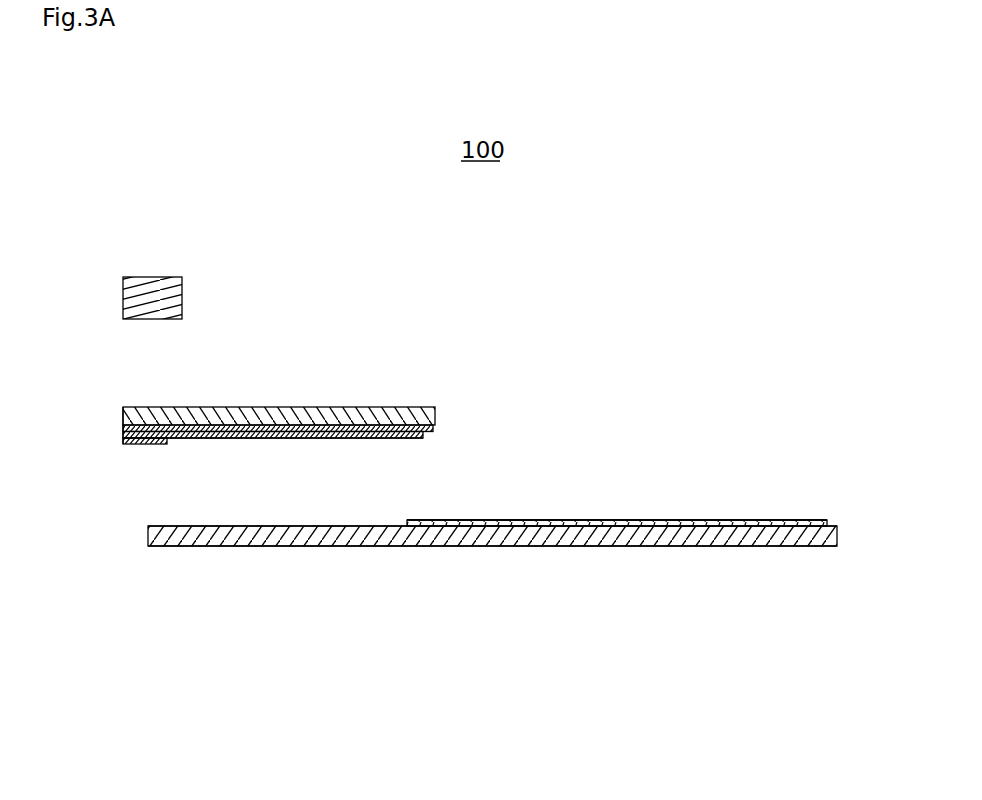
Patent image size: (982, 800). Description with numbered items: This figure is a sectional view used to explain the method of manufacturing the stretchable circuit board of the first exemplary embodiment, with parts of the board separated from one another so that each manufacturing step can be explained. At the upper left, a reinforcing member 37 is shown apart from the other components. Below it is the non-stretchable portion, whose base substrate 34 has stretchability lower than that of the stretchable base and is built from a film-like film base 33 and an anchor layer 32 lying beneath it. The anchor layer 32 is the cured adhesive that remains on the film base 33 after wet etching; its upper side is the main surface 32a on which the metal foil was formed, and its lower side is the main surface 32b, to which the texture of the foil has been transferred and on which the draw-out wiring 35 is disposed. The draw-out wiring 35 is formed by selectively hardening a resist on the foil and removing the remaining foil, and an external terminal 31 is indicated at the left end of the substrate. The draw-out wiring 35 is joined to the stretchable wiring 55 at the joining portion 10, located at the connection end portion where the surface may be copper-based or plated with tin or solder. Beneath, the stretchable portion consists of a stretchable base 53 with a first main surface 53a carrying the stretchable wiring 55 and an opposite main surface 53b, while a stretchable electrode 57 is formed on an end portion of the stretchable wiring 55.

The reinforcing member 37 is at (163, 277).
The base substrate 34 is at (376, 417).
The film base 33 is at (437, 413).
The anchor layer 32 is at (344, 438).
The main surface 32a is at (433, 429).
The main surface 32b is at (423, 437).
The draw-out wiring 35 is at (205, 444).
The external terminal 31 is at (125, 440).
The joining portion 10 is at (410, 520).
The stretchable wiring 55 is at (602, 520).
The stretchable electrode 57 is at (786, 520).
The stretchable base 53 is at (435, 536).
The main surface 53a is at (172, 524).
The main surface 53b is at (172, 547).